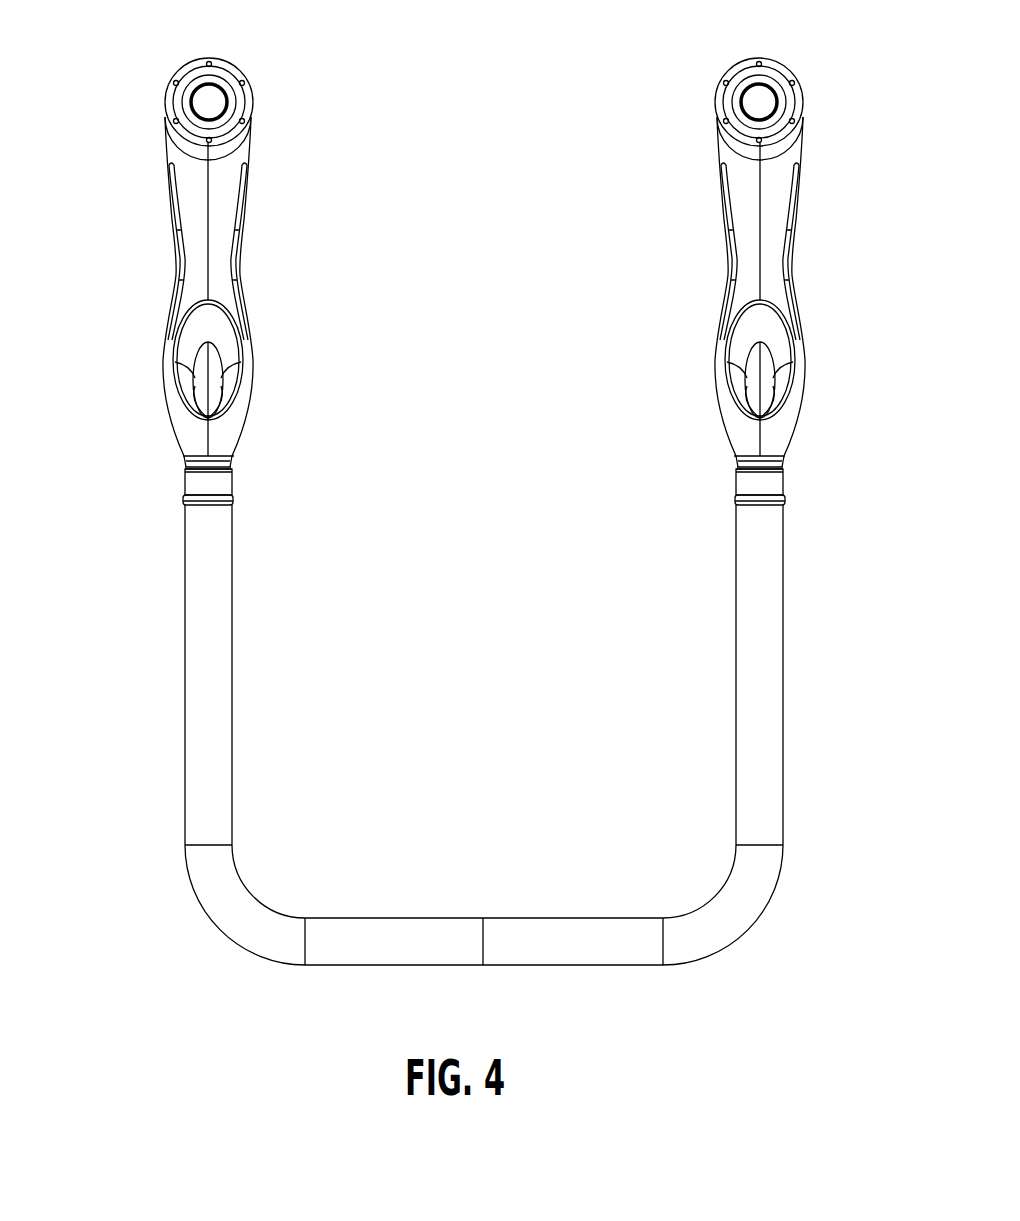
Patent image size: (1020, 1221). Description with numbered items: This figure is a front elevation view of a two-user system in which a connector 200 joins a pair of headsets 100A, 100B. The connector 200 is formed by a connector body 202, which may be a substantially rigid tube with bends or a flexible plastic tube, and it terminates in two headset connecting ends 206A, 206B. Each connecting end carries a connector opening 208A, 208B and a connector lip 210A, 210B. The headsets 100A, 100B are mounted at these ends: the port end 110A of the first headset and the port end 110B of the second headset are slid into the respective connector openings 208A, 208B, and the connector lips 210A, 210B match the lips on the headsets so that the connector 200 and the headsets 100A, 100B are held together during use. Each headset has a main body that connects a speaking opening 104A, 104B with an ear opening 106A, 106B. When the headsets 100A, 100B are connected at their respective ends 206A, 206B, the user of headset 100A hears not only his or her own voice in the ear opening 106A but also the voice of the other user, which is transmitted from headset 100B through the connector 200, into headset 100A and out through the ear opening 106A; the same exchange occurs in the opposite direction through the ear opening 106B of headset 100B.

The headset 100A is at (288, 206).
The headset 100B is at (679, 206).
The speaking opening 104A is at (215, 372).
The speaking opening 104B is at (753, 372).
The ear opening 106A is at (208, 102).
The ear opening 106B is at (759, 102).
The port end 110A is at (181, 467).
The port end 110B is at (787, 467).
The connector 200 is at (470, 877).
The connector body 202 is at (388, 918).
The headset connecting end 206A is at (280, 472).
The headset connecting end 206B is at (688, 472).
The connector opening 208A is at (232, 468).
The connector opening 208B is at (736, 468).
The connector lip 210A is at (234, 499).
The connector lip 210B is at (734, 499).